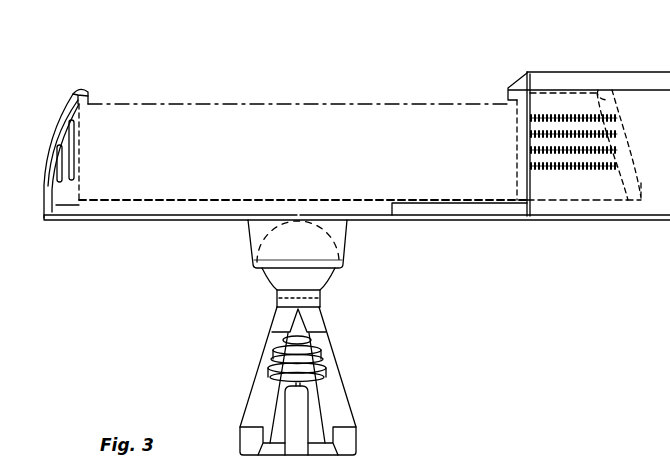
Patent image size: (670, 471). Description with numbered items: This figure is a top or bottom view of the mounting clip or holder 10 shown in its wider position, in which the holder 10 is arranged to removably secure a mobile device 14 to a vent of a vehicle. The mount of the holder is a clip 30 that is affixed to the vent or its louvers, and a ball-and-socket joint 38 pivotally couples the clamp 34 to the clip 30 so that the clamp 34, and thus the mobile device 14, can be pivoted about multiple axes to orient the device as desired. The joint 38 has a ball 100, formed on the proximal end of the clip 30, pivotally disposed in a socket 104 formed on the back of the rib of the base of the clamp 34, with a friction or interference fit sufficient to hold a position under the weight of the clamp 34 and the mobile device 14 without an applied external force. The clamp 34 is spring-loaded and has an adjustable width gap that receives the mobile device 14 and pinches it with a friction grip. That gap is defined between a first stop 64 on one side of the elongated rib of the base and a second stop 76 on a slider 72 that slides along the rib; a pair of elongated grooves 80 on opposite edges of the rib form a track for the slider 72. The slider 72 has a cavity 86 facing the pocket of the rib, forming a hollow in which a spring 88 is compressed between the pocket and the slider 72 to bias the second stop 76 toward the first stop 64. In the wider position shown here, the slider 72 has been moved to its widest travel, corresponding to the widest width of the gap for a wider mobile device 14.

The mounting clip or holder 10 is at (407, 288).
The mobile device 14 is at (216, 104).
The first stop 64 is at (58, 108).
The slider 72 is at (527, 72).
The second stop 76 is at (520, 141).
The cavity 86 is at (553, 100).
The spring 88 is at (597, 72).
The clamp 34 is at (472, 220).
The elongated grooves 80 is at (440, 207).
The socket 104 is at (248, 228).
The ball-and-socket joint 38 is at (343, 254).
The ball 100 is at (278, 278).
The clip 30 is at (343, 388).